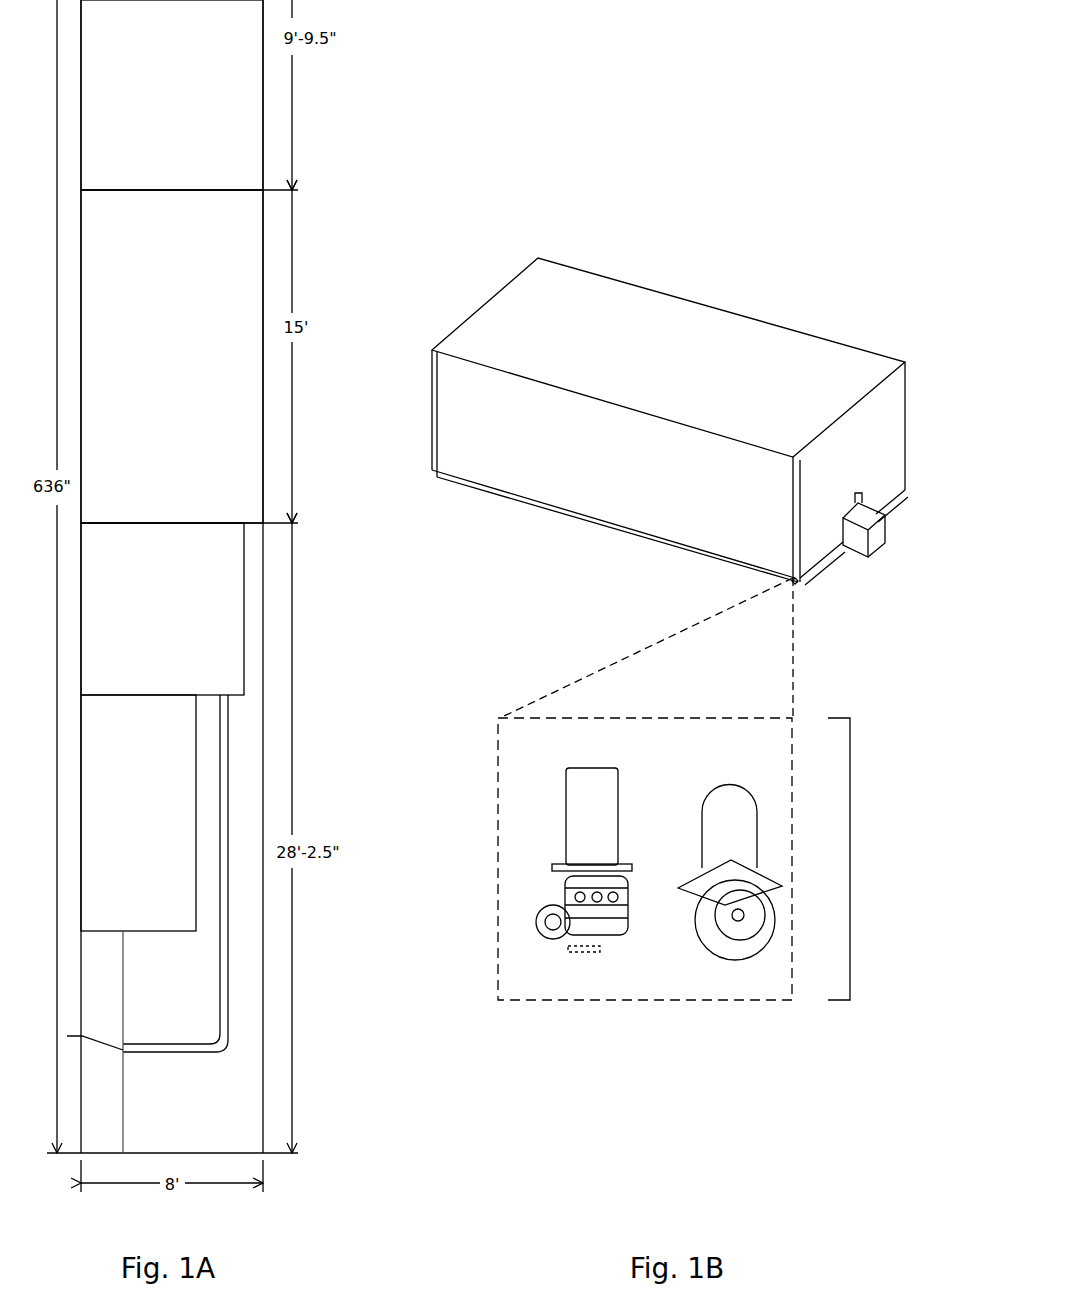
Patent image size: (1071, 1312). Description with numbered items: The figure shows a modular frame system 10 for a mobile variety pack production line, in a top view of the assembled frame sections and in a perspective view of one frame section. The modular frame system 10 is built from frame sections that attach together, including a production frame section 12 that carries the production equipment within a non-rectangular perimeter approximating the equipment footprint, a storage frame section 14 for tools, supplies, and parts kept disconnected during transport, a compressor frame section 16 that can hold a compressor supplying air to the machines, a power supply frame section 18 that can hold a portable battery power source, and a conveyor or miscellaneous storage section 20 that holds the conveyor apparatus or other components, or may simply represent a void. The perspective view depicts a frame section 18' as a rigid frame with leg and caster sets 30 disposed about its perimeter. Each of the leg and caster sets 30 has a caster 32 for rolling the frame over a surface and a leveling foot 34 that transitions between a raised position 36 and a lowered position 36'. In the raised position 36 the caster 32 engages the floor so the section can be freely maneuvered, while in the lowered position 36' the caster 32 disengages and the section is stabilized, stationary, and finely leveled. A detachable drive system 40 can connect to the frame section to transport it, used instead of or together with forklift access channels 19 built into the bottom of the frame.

In FIG. 1A, the modular frame system 10 is at (328, 213).
In FIG. 1A, the production frame section 12 is at (181, 1102).
In FIG. 1A, the storage frame section 14 is at (124, 856).
In FIG. 1A, the compressor frame section 16 is at (177, 679).
In FIG. 1A, the power supply frame section 18 is at (172, 356).
In FIG. 1B, the power supply frame section 18 is at (832, 624).
In FIG. 1B, the power supply module enclosure 18' is at (668, 420).
In FIG. 1B, the forklift access channels 19 is at (830, 552).
In FIG. 1A, the conveyor or miscellaneous storage section 20 is at (158, 160).
In FIG. 1A, the leg and caster sets 30 is at (257, 402).
In FIG. 1B, the leg and caster sets 30 is at (852, 853).
In FIG. 1B, the caster 32 is at (533, 932).
In FIG. 1B, the leveling foot 34 is at (578, 963).
In FIG. 1B, the raised position 36 is at (661, 912).
In FIG. 1B, the lowered position 36' is at (615, 1017).
In FIG. 1B, the drive system 40 is at (885, 530).